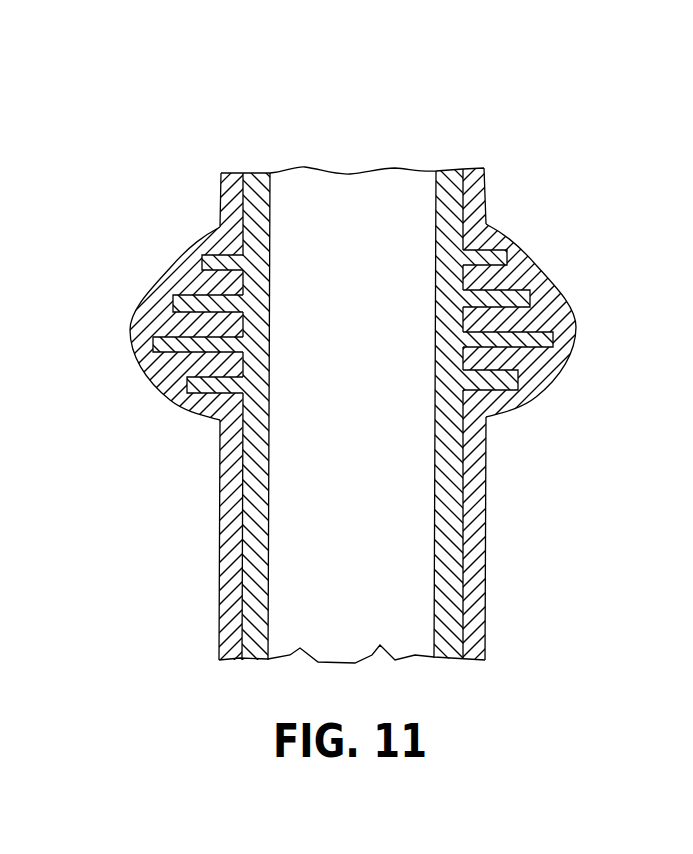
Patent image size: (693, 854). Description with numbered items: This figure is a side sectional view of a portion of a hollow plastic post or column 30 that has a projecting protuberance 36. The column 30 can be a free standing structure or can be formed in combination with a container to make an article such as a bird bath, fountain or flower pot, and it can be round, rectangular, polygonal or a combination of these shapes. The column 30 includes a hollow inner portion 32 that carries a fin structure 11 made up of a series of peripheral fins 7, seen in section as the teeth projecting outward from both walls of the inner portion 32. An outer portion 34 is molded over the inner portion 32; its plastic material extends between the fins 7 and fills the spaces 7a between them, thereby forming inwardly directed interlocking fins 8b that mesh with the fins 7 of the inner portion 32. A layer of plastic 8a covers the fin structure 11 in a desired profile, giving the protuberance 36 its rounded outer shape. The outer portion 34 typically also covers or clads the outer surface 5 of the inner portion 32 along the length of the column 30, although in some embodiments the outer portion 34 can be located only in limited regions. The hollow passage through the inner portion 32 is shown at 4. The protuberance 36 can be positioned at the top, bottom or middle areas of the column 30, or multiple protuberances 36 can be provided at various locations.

The column 30 is at (322, 152).
The hollow inner portion 32 is at (445, 169).
The outer portion 34 is at (487, 517).
The protuberance 36 is at (590, 295).
The lumen 4 is at (435, 483).
The outer surface 5 is at (467, 453).
The fins 7 is at (548, 297).
The spaces 7a is at (522, 356).
The layer of plastic 8a is at (576, 326).
The interlocking fins 8b is at (470, 320).
The fin structure 11 is at (495, 233).